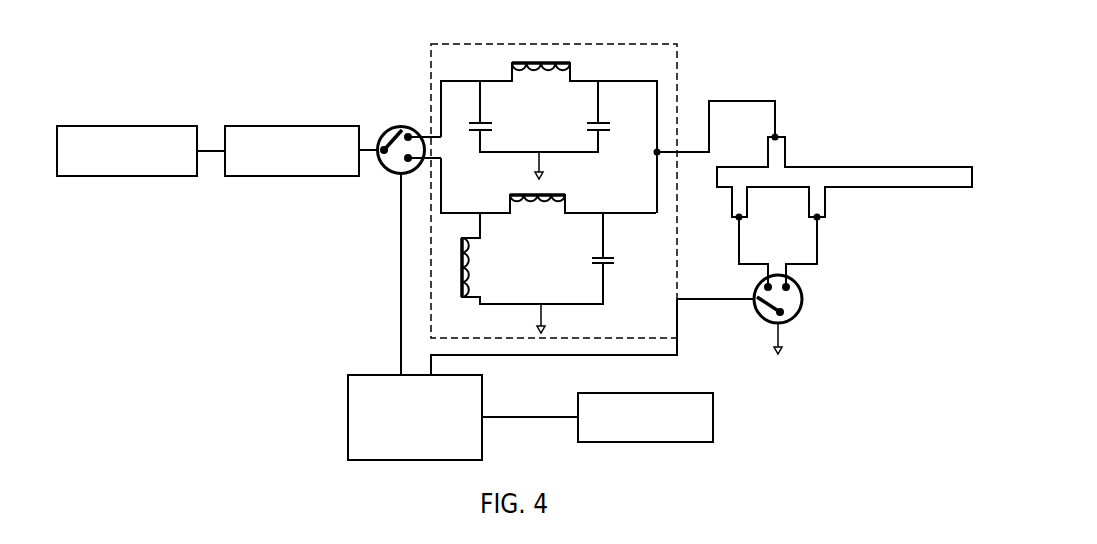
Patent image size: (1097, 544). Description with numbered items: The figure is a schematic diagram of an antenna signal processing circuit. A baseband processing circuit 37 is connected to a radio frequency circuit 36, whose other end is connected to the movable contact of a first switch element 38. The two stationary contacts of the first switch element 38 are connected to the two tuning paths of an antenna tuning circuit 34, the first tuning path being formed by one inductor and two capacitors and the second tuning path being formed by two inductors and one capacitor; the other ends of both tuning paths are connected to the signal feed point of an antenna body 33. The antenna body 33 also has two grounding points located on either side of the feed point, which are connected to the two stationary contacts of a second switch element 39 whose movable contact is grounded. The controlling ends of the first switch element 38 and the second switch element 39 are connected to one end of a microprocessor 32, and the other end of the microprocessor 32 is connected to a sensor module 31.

The sensor module 31 is at (713, 413).
The microprocessor 32 is at (348, 415).
The antenna body 33 is at (895, 165).
The antenna tuning circuit 34 is at (677, 83).
The radio frequency circuit 36 is at (292, 123).
The baseband processing circuit 37 is at (128, 123).
The first switch element 38 is at (401, 126).
The second switch element 39 is at (803, 298).